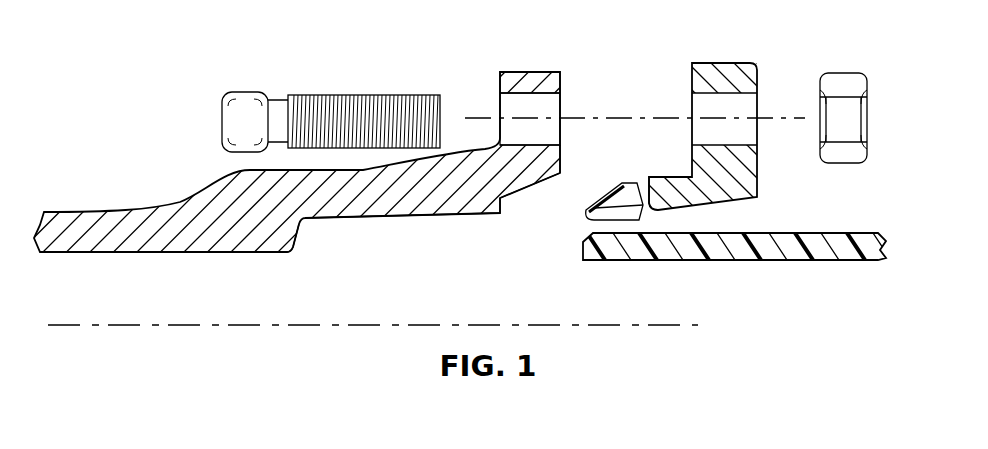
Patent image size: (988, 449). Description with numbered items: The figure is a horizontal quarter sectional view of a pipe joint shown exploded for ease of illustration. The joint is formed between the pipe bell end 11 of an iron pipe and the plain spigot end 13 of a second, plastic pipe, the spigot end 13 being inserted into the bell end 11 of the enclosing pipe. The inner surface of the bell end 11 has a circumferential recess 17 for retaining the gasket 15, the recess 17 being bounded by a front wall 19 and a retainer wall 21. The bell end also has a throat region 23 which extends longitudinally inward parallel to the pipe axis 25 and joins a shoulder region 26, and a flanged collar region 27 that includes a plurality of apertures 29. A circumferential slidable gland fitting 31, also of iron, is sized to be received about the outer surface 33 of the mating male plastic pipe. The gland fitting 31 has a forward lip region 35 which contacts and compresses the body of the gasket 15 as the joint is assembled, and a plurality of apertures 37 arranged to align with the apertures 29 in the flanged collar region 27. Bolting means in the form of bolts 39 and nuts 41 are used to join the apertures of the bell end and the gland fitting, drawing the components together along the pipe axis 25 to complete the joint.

The pipe bell end 11 is at (156, 177).
The plain spigot end 13 is at (739, 214).
The gasket 15 is at (604, 180).
The circumferential recess 17 is at (527, 188).
The front wall 19 is at (563, 157).
The retainer wall 21 is at (505, 212).
The throat region 23 is at (410, 216).
The pipe axis 25 is at (292, 328).
The shoulder region 26 is at (296, 236).
The flanged collar region 27 is at (520, 72).
The apertures 29 is at (554, 103).
The slidable gland fitting 31 is at (757, 63).
The outer surface 33 is at (792, 233).
The forward lip region 35 is at (650, 176).
The apertures 37 is at (752, 102).
The bolts 39 is at (358, 95).
The nuts 41 is at (850, 73).